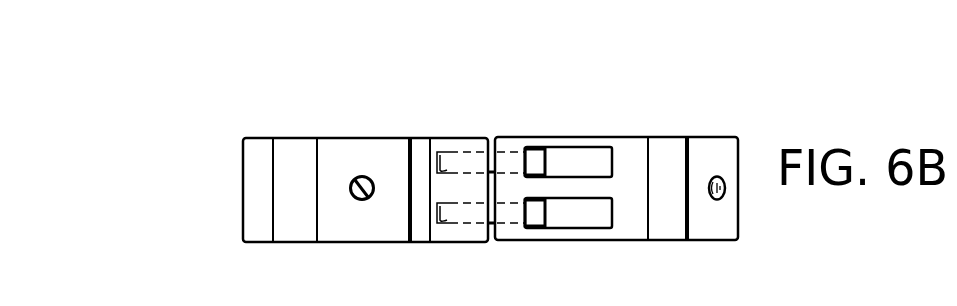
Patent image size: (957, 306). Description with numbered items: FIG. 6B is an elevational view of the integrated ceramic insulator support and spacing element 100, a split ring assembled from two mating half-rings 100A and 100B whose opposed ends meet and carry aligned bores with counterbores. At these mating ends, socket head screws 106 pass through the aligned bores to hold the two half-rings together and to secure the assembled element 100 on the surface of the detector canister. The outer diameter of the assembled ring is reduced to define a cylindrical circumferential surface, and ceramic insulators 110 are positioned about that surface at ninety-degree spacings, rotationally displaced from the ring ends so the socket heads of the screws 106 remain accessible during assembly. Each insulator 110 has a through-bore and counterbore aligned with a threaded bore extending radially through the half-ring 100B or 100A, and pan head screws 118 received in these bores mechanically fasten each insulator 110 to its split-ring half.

The integrated ceramic insulator support and spacing element 100 is at (283, 259).
The mating half-ring 100A is at (298, 143).
The mating half-ring 100B is at (635, 136).
The screws 106 is at (535, 155).
The ceramic insulators 110 is at (382, 240).
The pan head screws 118 is at (364, 176).